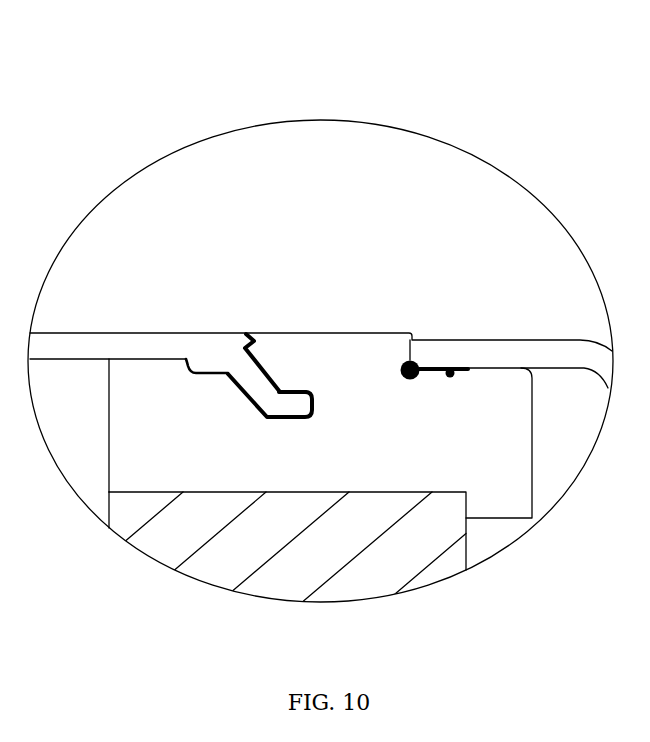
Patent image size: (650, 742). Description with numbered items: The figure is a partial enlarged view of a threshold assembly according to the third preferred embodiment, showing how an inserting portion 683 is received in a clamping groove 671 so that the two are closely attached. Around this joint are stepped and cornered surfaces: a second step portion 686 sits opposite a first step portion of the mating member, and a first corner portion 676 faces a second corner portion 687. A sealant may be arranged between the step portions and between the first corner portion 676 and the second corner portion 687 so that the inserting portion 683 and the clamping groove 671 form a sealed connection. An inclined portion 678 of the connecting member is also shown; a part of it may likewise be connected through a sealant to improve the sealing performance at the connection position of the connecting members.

The clamping groove 671 is at (313, 390).
The first corner portion 676 is at (249, 414).
The inclined portion 678 is at (190, 372).
The inserting portion 683 is at (250, 378).
The second step portion 686 is at (205, 363).
The second corner portion 687 is at (290, 403).